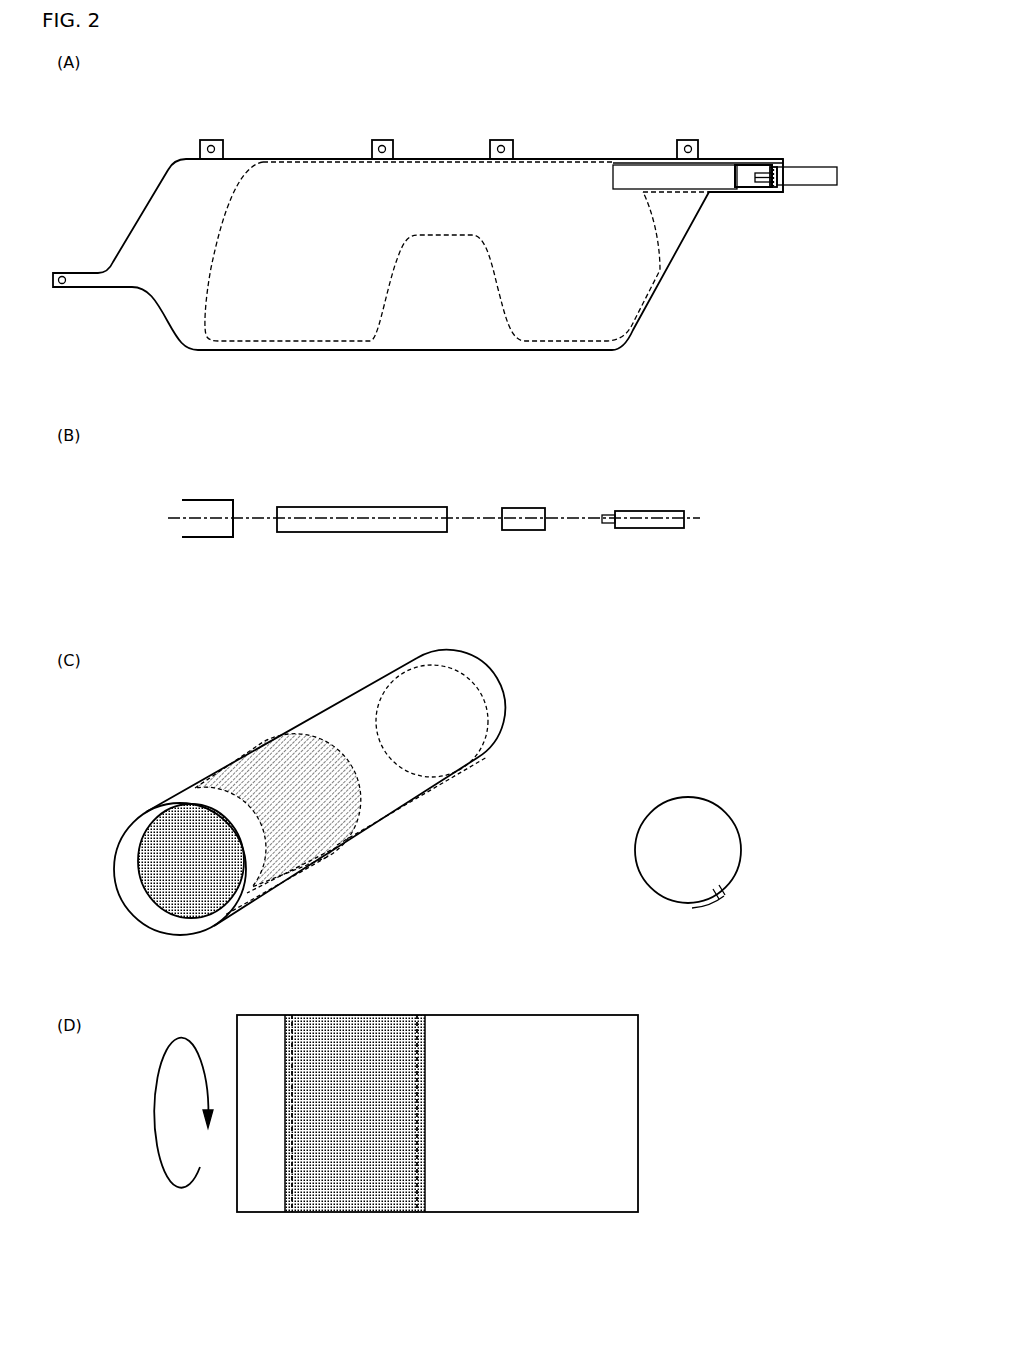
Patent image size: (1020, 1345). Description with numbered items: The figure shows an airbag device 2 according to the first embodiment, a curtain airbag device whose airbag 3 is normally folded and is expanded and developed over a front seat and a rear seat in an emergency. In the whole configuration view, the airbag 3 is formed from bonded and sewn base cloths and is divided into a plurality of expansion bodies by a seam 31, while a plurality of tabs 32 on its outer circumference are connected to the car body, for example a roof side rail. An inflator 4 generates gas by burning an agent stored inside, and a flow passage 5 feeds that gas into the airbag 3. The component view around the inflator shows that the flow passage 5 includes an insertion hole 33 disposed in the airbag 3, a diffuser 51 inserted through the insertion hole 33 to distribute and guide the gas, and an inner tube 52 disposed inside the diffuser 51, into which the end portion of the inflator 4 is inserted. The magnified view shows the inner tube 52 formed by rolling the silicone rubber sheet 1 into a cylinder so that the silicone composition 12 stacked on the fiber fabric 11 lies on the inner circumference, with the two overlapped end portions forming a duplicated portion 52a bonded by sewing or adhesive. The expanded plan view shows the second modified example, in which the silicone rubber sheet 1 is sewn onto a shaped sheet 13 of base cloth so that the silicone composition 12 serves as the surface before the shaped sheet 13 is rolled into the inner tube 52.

The silicone rubber sheet 1 is at (431, 1053).
The airbag device 2 is at (620, 119).
The airbag 3 is at (162, 191).
The inflator 4 is at (817, 167).
The flow passage 5 is at (758, 208).
The fiber fabric 11 is at (160, 927).
The silicone composition 12 is at (157, 888).
The shaped sheet 13 is at (639, 1100).
The seam 31 is at (398, 308).
The tabs 32 is at (63, 273).
The insertion hole 33 is at (716, 193).
The diffuser 51 is at (624, 190).
The inner tube 52 is at (742, 165).
The duplicated portion 52a is at (227, 930).